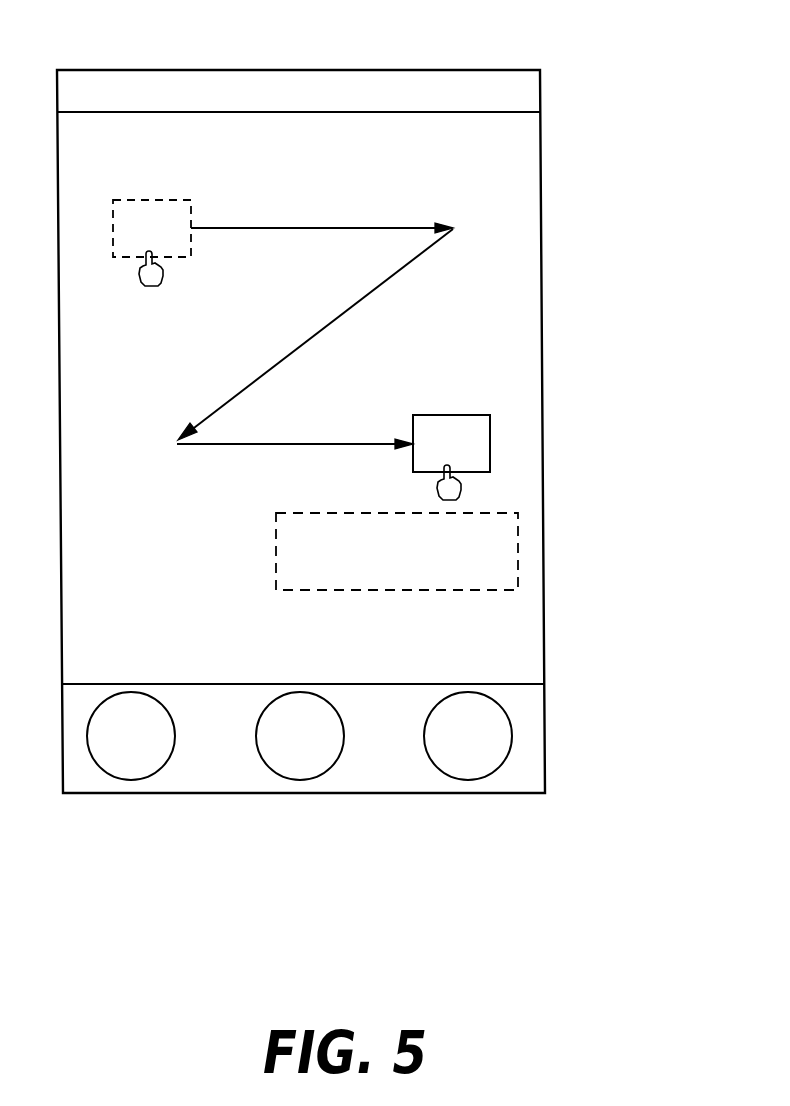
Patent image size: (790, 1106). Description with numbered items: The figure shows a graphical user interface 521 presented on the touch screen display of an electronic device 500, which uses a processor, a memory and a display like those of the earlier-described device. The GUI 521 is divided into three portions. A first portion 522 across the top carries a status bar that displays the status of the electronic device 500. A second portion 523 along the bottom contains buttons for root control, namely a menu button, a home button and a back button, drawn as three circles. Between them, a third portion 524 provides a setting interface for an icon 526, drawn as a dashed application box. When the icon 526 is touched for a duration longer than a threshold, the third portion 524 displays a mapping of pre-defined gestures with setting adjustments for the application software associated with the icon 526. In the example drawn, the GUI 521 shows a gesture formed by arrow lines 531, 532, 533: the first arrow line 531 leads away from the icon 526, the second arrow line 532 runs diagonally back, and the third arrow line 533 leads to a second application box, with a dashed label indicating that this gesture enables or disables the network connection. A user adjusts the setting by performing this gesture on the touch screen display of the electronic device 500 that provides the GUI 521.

The electronic device 500 is at (364, 399).
The graphical user interface 521 is at (543, 273).
The first portion 522 is at (526, 85).
The second portion 523 is at (530, 736).
The third portion 524 is at (527, 168).
The icon 526 is at (188, 198).
The arrow line 531 is at (332, 228).
The arrow line 532 is at (390, 278).
The arrow line 533 is at (363, 444).